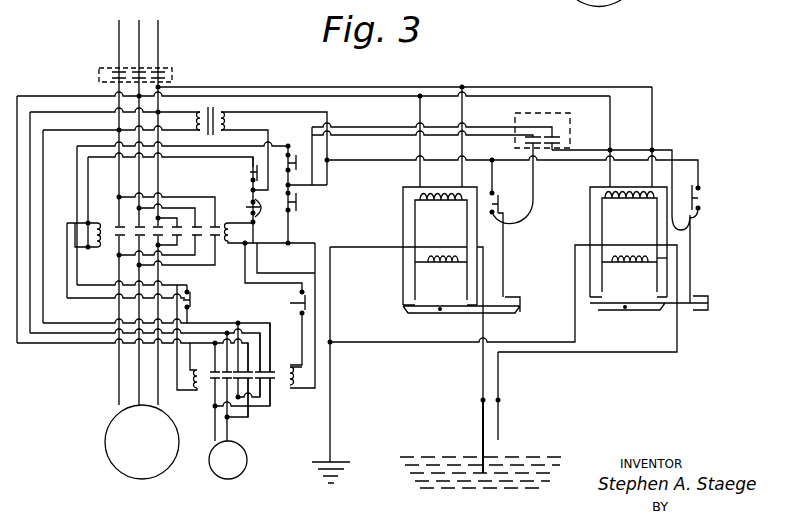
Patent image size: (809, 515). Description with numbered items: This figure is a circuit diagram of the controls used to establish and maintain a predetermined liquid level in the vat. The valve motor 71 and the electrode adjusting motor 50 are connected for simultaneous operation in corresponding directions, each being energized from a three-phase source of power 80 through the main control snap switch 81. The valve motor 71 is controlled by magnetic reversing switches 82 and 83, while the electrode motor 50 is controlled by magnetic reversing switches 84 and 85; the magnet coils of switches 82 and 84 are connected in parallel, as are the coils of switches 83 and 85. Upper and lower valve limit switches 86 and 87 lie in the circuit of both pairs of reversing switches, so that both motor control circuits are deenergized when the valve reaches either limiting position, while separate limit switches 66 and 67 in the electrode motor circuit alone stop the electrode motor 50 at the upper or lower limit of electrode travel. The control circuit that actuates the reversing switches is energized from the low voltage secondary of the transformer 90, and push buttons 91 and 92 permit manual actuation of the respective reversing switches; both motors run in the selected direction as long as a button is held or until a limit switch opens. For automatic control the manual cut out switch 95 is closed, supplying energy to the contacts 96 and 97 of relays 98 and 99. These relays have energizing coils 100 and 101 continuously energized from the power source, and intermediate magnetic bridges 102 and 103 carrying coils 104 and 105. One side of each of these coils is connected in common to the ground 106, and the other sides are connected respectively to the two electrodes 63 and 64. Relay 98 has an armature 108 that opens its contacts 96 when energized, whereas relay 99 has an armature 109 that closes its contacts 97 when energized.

The electrode adjusting motor 50 is at (216, 470).
The electrode 63 is at (480, 420).
The electrode 64 is at (500, 420).
The limit switch 66 is at (192, 300).
The limit switch 67 is at (306, 303).
The valve motor 71 is at (105, 438).
The three-phase source of power 80 is at (158, 28).
The main control snap switch 81 is at (99, 75).
The magnetic reversing switch 82 is at (114, 228).
The magnetic reversing switch 83 is at (216, 238).
The magnetic reversing switch 84 is at (214, 382).
The magnetic reversing switch 85 is at (275, 382).
The upper valve limit switch 86 is at (244, 174).
The lower valve limit switch 87 is at (259, 212).
The transformer 90 is at (221, 112).
The push button 91 is at (312, 158).
The push button 92 is at (298, 203).
The manual cut out switch 95 is at (552, 113).
The contacts 96 is at (508, 224).
The contacts 97 is at (712, 193).
The relay 98 is at (403, 222).
The relay 99 is at (590, 212).
The energizing coil 100 is at (421, 190).
The energizing coil 101 is at (612, 199).
The intermediate magnetic bridge 102 is at (418, 256).
The intermediate magnetic bridge 103 is at (665, 257).
The coil 104 is at (432, 262).
The coil 105 is at (618, 262).
The ground 106 is at (334, 462).
The armature 108 is at (420, 311).
The armature 109 is at (628, 312).